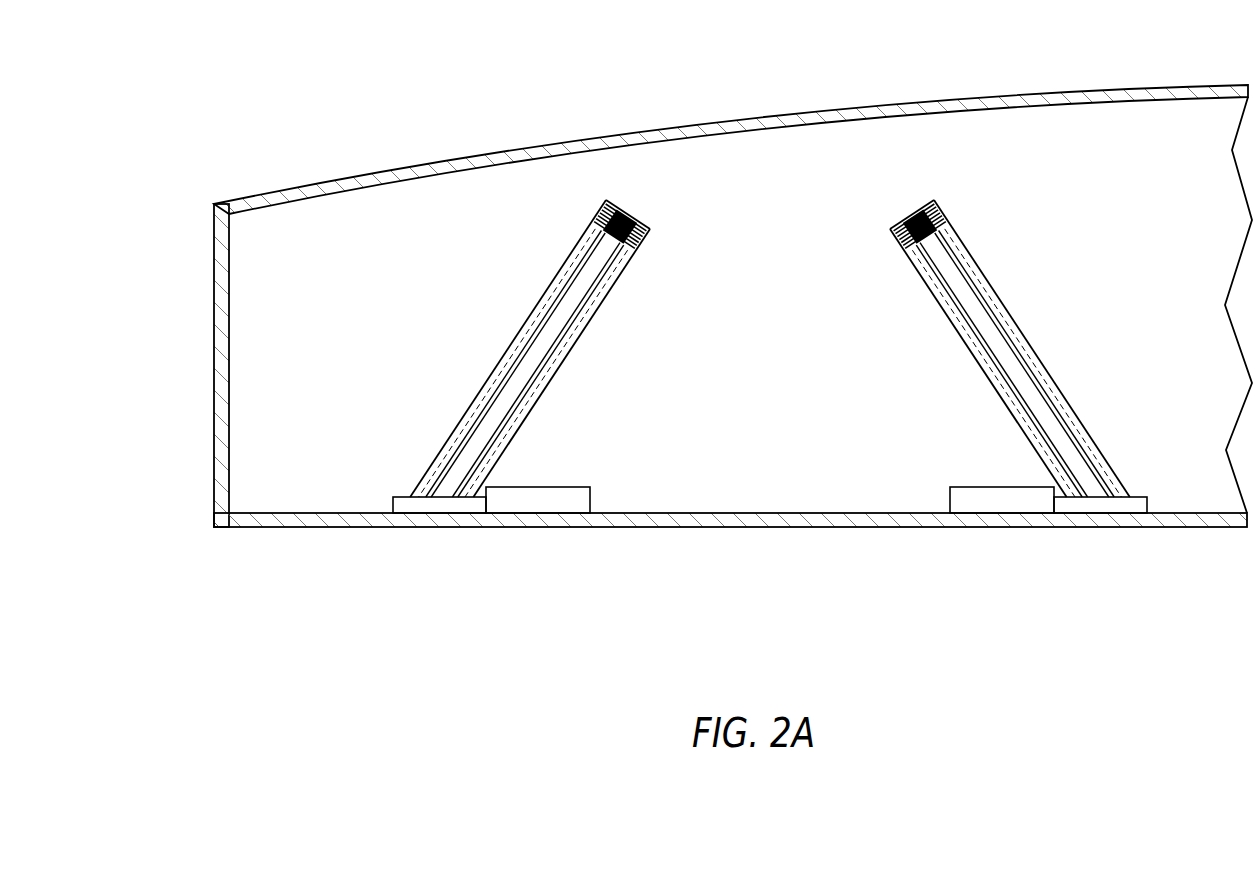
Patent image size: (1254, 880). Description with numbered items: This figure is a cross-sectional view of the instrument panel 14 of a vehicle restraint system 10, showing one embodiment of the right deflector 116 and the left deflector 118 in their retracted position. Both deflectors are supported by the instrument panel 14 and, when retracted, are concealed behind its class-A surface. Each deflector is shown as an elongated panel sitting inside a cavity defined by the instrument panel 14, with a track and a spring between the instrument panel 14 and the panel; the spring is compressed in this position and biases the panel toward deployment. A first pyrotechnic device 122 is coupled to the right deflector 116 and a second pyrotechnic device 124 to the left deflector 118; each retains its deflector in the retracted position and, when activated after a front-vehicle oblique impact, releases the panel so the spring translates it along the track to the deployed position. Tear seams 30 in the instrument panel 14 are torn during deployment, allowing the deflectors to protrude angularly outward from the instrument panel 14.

The restraint system 10 is at (733, 273).
The instrument panel 14 is at (855, 118).
The tear seams 30 is at (393, 516).
The right deflector 116 is at (982, 348).
The left deflector 118 is at (558, 348).
The first pyrotechnic device 122 is at (958, 486).
The second pyrotechnic device 124 is at (582, 487).